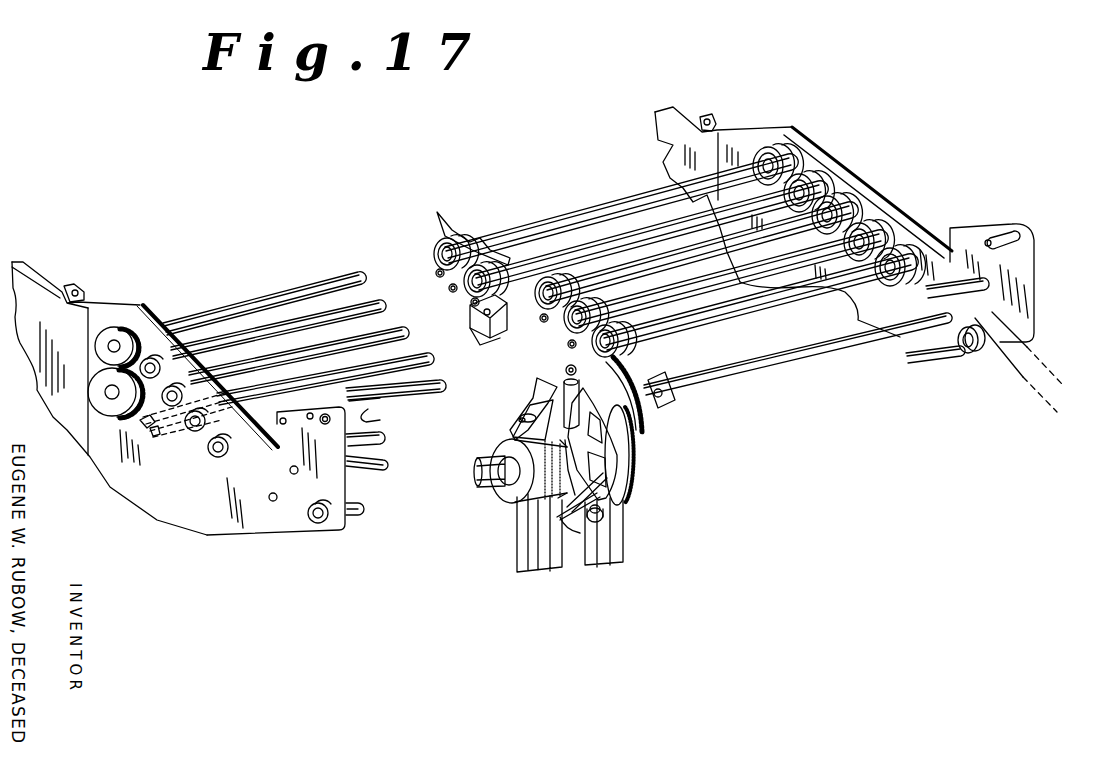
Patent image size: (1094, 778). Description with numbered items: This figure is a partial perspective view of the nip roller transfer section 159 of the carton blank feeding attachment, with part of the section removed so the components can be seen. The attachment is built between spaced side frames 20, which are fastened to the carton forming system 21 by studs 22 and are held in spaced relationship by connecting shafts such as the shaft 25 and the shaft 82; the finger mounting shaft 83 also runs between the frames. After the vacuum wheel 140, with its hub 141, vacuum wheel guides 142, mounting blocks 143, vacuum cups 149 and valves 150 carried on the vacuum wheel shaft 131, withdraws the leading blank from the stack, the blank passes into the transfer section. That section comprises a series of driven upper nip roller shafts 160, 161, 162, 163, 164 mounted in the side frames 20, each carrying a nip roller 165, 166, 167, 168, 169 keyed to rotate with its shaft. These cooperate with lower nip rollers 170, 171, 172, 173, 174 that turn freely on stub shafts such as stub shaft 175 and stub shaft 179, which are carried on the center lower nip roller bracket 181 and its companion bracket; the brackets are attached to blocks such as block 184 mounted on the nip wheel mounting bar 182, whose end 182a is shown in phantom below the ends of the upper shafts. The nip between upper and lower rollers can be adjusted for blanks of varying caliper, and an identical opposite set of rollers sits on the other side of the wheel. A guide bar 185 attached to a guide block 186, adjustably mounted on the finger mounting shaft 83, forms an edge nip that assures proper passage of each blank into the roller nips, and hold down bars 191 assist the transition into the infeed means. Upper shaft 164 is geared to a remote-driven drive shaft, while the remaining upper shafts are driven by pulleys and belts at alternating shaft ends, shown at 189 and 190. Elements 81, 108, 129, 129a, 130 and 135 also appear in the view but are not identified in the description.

The side frames 20 is at (265, 480).
The carton forming system 21 is at (51, 269).
The studs 22 is at (85, 292).
The shaft 25 is at (361, 411).
The shaft 81 is at (362, 510).
The shaft 82 is at (362, 446).
The finger mounting shaft 83 is at (380, 468).
The diagonal bar 108 is at (1000, 370).
The hub 129 is at (513, 502).
The hub cap 129a is at (530, 427).
The gear 130 is at (635, 465).
The vacuum wheel shaft 131 is at (486, 466).
The arm 135 is at (545, 413).
The vacuum wheel 140 is at (548, 384).
The hub 141 is at (557, 517).
The vacuum wheel guides 142 is at (547, 378).
The mounting blocks 143 is at (567, 507).
The vacuum cups 149 is at (580, 360).
The valves 150 is at (567, 450).
The nip roller transfer section 159 is at (489, 226).
The upper nip roller shaft 160 is at (419, 407).
The upper nip roller shaft 161 is at (433, 362).
The upper nip roller shaft 162 is at (386, 333).
The upper nip roller shaft 163 is at (271, 327).
The upper nip roller shaft 164 is at (303, 287).
The nip roller 165 is at (612, 323).
The nip roller 166 is at (546, 322).
The nip roller 167 is at (535, 293).
The nip roller 168 is at (471, 302).
The nip roller 169 is at (437, 243).
The lower nip roller 170 is at (582, 383).
The lower nip roller 171 is at (569, 346).
The lower nip roller 172 is at (530, 333).
The lower nip roller 173 is at (468, 320).
The lower nip roller 174 is at (436, 275).
The stub shaft 175 is at (611, 380).
The stub shaft 179 is at (435, 268).
The center lower nip roller bracket 181 is at (450, 288).
The nip wheel mounting bar 182 is at (424, 342).
The end of nip wheel mounting bar 182a is at (161, 437).
The block 184 is at (487, 340).
The guide bar 185 is at (635, 372).
The guide block 186 is at (676, 404).
The pulley and belt drive 189 is at (860, 207).
The pulley and belt drive 190 is at (803, 157).
The hold down bars 191 is at (445, 213).